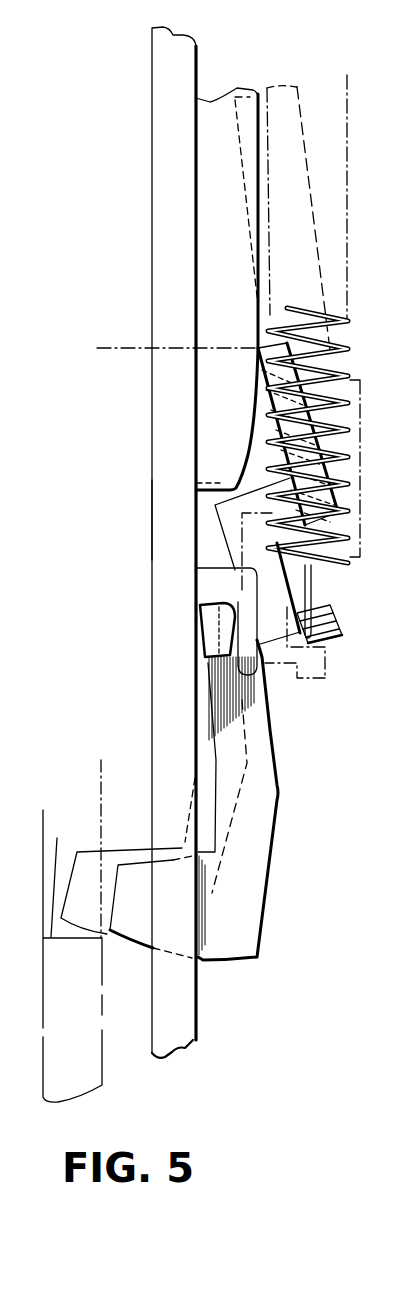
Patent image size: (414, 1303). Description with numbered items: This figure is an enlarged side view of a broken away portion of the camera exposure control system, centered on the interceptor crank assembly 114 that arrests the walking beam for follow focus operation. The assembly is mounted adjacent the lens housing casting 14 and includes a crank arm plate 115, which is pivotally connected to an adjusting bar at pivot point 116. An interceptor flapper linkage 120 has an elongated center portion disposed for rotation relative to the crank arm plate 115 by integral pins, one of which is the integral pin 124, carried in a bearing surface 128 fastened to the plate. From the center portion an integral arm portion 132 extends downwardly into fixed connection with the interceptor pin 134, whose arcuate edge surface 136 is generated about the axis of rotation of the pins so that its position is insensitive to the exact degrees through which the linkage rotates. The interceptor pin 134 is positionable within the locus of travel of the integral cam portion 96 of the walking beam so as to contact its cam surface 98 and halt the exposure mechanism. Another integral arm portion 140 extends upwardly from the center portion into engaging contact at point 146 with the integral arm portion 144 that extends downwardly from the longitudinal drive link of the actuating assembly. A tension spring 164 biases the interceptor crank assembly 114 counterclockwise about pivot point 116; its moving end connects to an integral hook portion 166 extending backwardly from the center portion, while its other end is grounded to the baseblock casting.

The lens housing casting 14 is at (199, 1000).
The integral cam portion 96 is at (103, 1033).
The cam surface 98 is at (112, 931).
The interceptor crank assembly 114 is at (355, 313).
The crank arm plate 115 is at (157, 513).
The pivot point 116 is at (128, 349).
The interceptor flapper linkage 120 is at (273, 648).
The integral pin 124 is at (339, 659).
The bearing surface 128 is at (350, 626).
The integral arm portion 132 is at (278, 781).
The interceptor pin 134 is at (118, 866).
The arcuate edge surface 136 is at (132, 947).
The integral arm portion 140 is at (277, 428).
The integral arm portion 144 is at (205, 227).
The point 146 is at (258, 350).
The tension spring 164 is at (340, 427).
The integral hook portion 166 is at (335, 612).